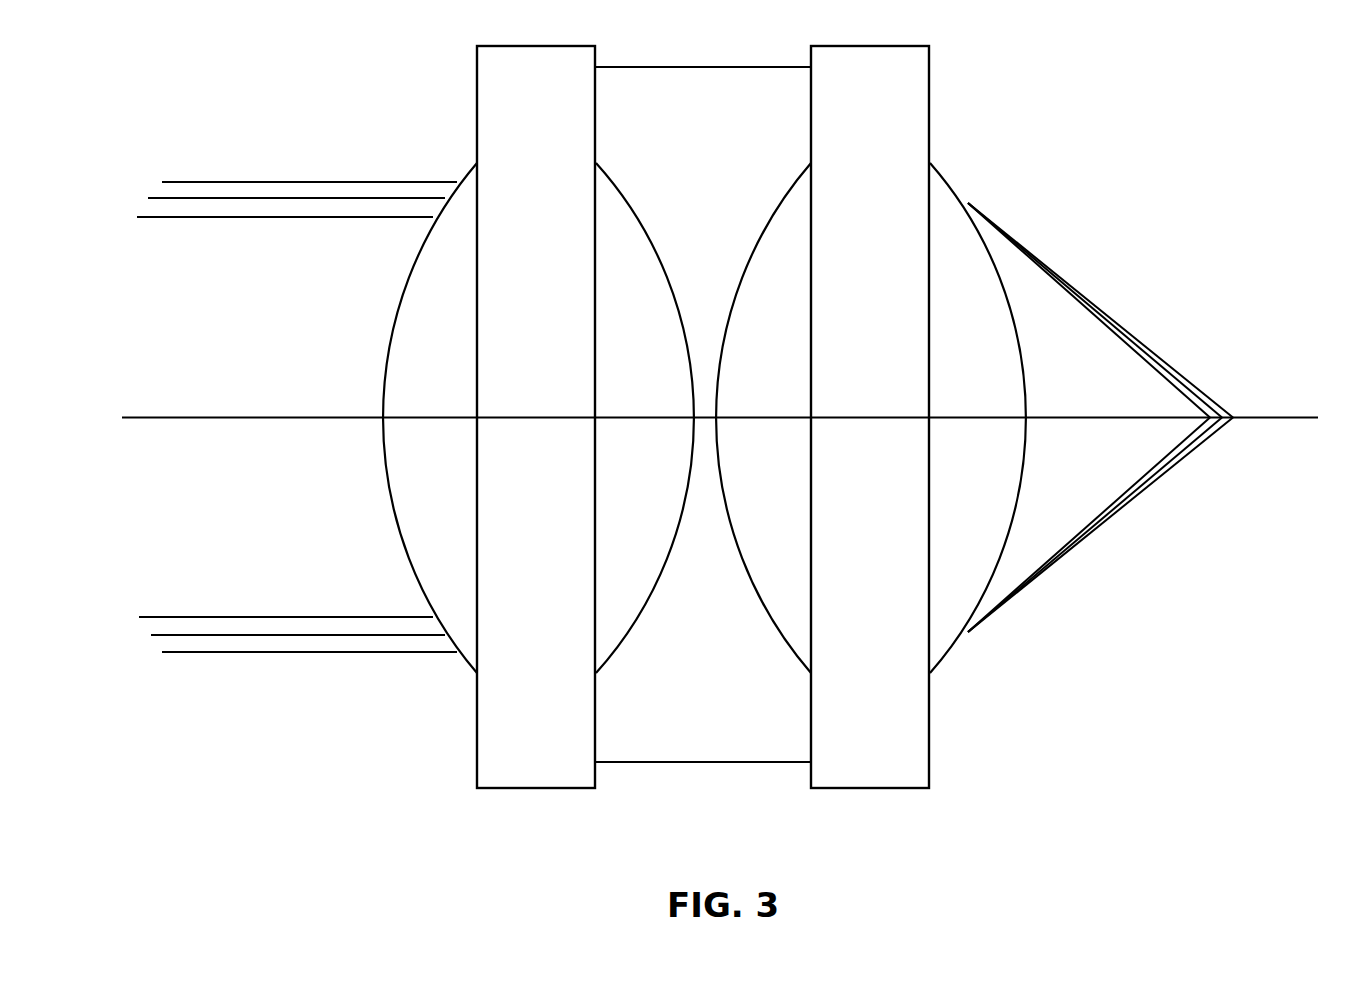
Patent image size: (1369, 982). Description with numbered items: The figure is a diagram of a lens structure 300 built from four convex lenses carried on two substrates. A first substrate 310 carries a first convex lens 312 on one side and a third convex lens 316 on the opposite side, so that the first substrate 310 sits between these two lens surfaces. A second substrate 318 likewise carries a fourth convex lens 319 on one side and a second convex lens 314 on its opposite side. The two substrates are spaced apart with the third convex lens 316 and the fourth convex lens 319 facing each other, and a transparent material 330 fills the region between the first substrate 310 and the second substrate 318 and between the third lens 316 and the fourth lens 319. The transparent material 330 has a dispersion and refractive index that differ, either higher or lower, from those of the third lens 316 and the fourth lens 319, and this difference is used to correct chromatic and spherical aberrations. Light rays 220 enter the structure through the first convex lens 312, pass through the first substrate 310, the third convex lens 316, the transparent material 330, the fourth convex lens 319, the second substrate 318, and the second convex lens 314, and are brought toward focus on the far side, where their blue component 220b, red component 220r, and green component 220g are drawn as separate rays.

The lens structure 300 is at (1124, 58).
The light rays 220 is at (257, 181).
The blue component 220b is at (1086, 302).
The red component 220r is at (1144, 348).
The green component 220g is at (1210, 394).
The first substrate 310 is at (573, 348).
The first convex lens 312 is at (467, 348).
The third convex lens 316 is at (671, 348).
The transparent material 330 is at (737, 189).
The second substrate 318 is at (907, 348).
The fourth convex lens 319 is at (802, 348).
The second convex lens 314 is at (1009, 348).